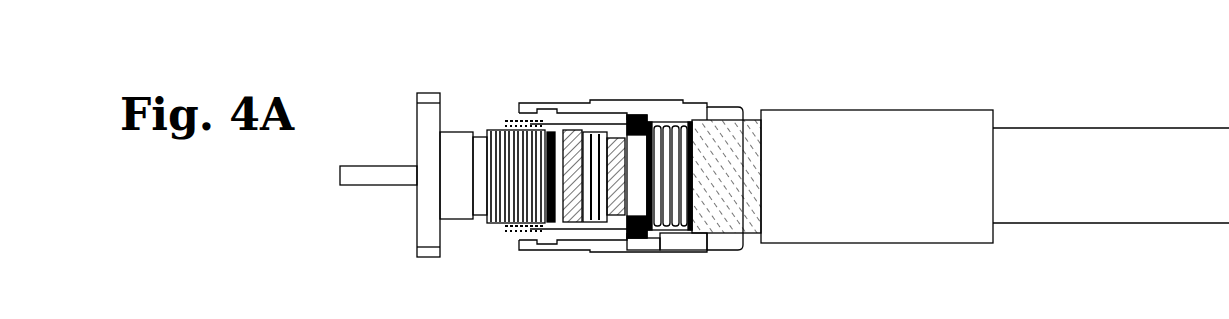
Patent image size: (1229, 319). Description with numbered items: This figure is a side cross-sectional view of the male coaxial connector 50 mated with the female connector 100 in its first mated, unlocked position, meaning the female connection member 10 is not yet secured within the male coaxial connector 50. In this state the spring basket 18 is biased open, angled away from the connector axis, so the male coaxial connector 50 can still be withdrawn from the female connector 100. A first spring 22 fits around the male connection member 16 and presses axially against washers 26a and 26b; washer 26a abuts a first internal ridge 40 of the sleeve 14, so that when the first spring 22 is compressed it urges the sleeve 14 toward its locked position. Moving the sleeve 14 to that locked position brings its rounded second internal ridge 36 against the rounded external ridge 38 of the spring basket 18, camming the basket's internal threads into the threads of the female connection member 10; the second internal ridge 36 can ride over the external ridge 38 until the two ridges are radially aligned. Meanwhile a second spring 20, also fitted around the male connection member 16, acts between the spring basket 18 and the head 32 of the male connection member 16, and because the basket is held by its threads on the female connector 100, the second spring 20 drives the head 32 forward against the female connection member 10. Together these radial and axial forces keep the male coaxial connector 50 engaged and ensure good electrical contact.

The female connector 100 is at (390, 96).
The female connection member 10 is at (495, 200).
The external ridge 38 is at (504, 118).
The second internal ridge 36 is at (508, 227).
The sleeve 14 is at (722, 251).
The spring basket 18 is at (557, 222).
The head 32 is at (571, 130).
The second spring 20 is at (598, 134).
The first internal ridge 40 is at (633, 238).
The first spring 22 is at (653, 120).
The washer 26a is at (643, 239).
The washer 26b is at (683, 233).
The male connection member 16 is at (722, 106).
The male coaxial connector 50 is at (745, 45).